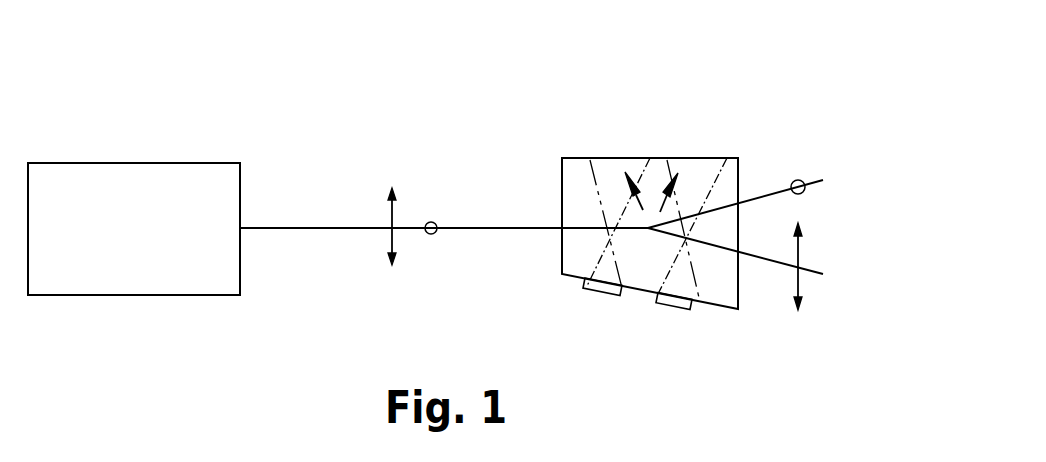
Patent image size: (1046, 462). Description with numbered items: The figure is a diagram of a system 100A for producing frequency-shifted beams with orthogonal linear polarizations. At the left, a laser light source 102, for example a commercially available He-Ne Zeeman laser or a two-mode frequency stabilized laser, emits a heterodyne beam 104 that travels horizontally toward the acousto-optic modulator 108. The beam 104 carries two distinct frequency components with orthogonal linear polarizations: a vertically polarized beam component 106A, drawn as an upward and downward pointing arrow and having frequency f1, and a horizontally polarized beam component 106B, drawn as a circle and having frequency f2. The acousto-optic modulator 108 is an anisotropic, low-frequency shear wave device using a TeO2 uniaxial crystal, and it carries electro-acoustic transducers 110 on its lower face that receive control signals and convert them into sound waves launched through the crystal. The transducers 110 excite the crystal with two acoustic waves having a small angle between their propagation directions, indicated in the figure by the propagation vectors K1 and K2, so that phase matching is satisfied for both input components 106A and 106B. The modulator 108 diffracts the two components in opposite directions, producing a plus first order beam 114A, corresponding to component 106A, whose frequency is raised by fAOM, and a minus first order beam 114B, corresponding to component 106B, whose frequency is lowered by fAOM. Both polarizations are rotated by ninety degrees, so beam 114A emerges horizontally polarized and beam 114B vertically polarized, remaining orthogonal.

The system 100A is at (236, 85).
The laser light source 102 is at (132, 163).
The heterodyne beam 104 is at (279, 228).
The beam component 106A is at (388, 222).
The beam component 106B is at (431, 235).
The acousto-optic modulator 108 is at (605, 158).
The electro-acoustic transducers 110 is at (662, 302).
The plus first order beam 114A is at (798, 180).
The minus first order beam 114B is at (802, 272).
The propagation vector K1 is at (642, 203).
The propagation vector K2 is at (657, 200).